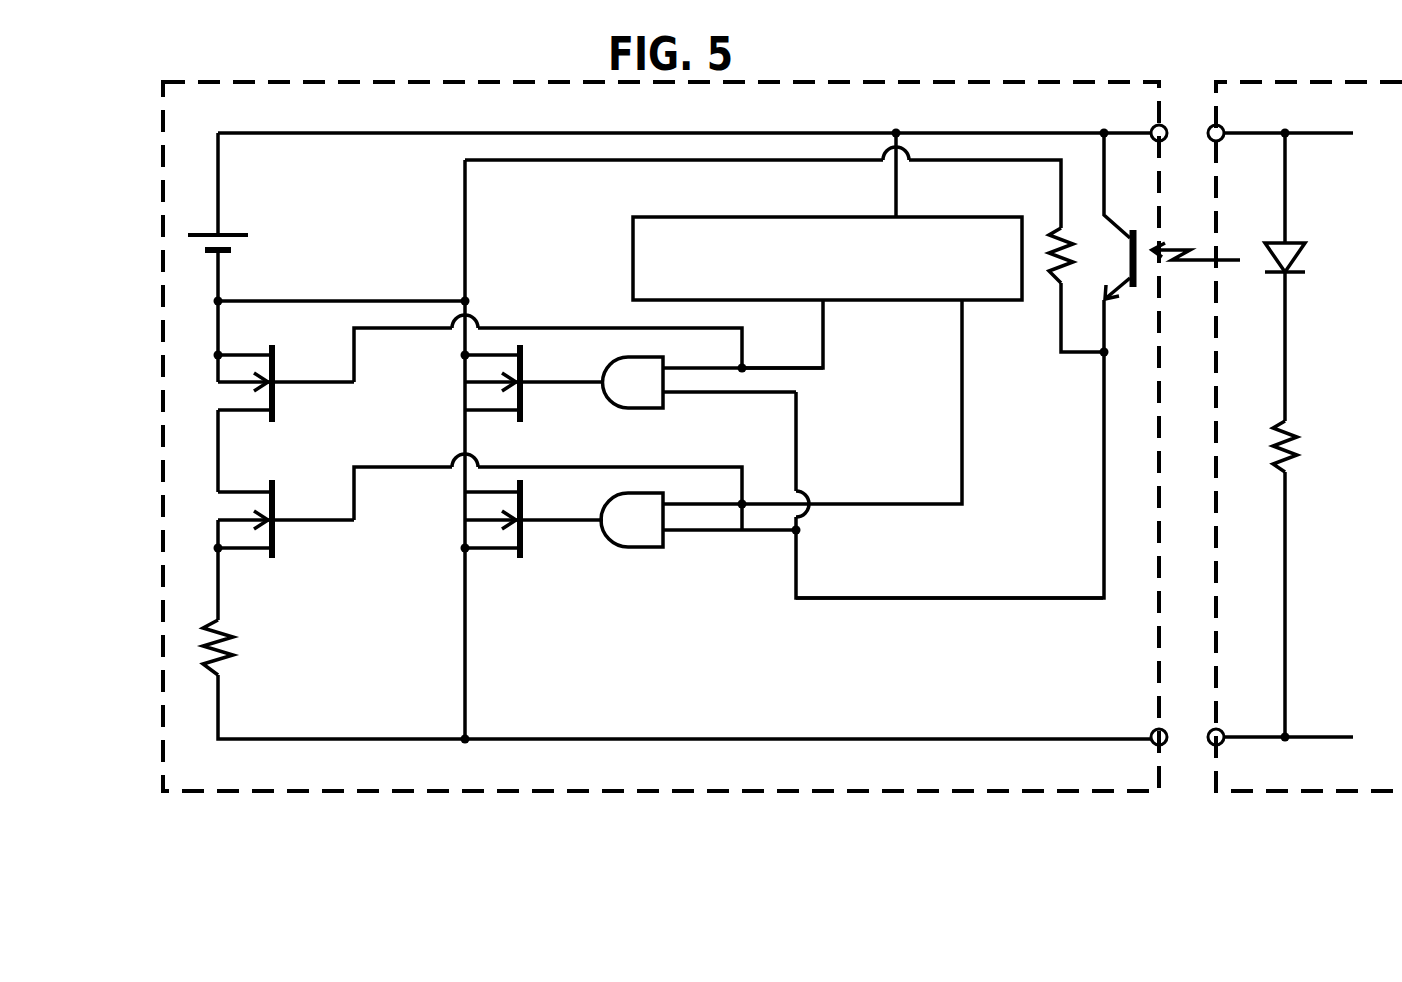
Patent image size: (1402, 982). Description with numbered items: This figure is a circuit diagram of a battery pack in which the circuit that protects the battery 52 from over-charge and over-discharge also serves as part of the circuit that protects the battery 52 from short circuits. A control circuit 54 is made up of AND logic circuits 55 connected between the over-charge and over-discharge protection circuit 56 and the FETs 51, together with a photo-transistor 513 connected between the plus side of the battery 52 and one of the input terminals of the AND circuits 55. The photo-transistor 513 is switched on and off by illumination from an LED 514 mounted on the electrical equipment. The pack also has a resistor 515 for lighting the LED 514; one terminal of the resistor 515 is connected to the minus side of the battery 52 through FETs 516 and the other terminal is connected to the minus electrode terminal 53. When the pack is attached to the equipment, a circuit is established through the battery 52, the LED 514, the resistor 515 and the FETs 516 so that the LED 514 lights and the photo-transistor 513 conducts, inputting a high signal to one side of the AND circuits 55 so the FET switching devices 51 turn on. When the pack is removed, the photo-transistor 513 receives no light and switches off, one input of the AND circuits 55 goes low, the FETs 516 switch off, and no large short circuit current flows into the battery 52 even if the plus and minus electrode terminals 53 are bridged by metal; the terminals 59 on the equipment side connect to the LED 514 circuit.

The FETs 51 is at (450, 518).
The battery 52 is at (229, 235).
The electrode terminals 53 is at (1151, 128).
The control circuit 54 is at (826, 622).
The AND logic circuits 55 is at (624, 390).
The over-charge and over-discharge protection circuit 56 is at (970, 232).
The charger terminals 59 is at (1224, 130).
The photo-transistor 513 is at (1118, 254).
The LED 514 is at (1296, 256).
The resistor 515 is at (232, 640).
The FETs 516 is at (222, 503).